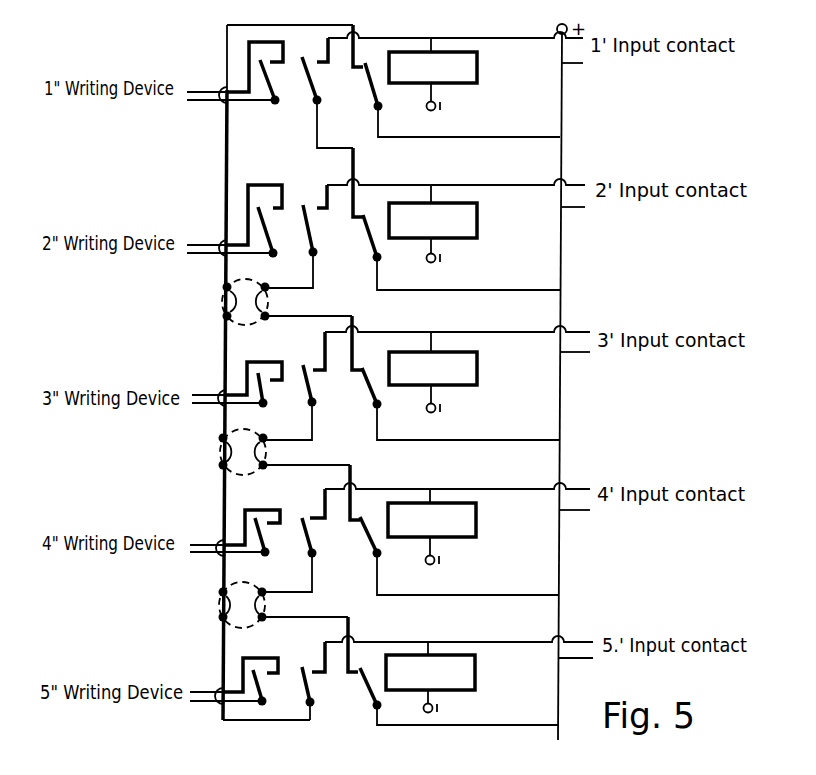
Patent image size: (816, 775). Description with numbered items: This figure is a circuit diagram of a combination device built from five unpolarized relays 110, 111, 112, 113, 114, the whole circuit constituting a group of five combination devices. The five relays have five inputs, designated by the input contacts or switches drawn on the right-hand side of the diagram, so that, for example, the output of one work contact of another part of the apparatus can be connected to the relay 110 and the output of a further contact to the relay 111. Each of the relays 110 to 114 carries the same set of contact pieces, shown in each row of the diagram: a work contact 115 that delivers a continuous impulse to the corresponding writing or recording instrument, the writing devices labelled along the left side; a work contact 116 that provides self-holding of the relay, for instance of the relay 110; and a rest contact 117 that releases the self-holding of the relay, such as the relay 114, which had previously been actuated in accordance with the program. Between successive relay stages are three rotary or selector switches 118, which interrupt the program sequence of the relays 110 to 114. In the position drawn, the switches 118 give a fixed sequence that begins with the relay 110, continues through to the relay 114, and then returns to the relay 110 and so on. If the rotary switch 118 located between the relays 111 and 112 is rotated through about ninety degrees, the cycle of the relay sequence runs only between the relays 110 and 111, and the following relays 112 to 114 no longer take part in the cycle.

The unpolarized relay 110 is at (477, 70).
The unpolarized relay 111 is at (477, 222).
The unpolarized relay 112 is at (477, 369).
The unpolarized relay 113 is at (476, 523).
The unpolarized relay 114 is at (475, 672).
The work contact 115 is at (257, 87).
The work contact 116 is at (442, 90).
The rest contact 117 is at (456, 81).
The rotary or selector switch 118 is at (266, 453).